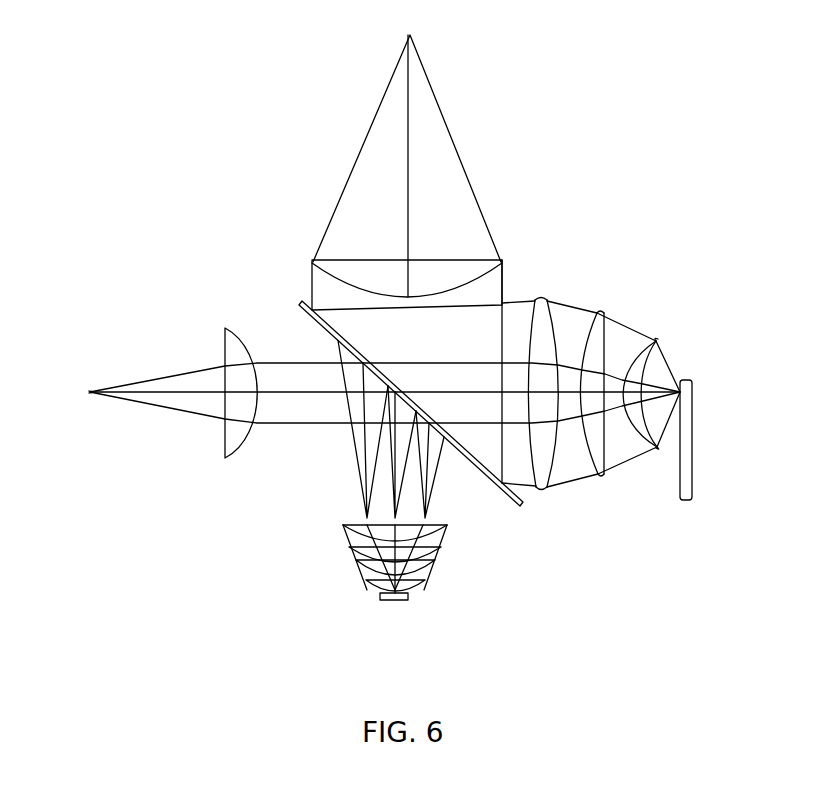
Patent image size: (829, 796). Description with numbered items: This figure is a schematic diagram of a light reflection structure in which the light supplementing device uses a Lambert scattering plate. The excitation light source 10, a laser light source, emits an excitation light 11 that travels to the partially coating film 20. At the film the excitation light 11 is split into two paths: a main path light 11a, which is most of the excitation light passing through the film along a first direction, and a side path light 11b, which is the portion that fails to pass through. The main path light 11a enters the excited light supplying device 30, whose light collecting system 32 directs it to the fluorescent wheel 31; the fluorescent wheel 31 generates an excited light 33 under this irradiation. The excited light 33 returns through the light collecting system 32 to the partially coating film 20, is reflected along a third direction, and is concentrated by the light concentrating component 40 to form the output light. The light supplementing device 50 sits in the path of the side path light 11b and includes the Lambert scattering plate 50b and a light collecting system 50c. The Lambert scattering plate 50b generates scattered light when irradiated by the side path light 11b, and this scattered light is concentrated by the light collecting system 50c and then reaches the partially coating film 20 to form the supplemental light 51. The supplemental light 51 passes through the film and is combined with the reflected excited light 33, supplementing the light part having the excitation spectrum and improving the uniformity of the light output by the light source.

The excitation light source 10 is at (90, 385).
The excitation light 11 is at (164, 379).
The main path light 11a is at (402, 362).
The side path light 11b is at (427, 467).
The partially coating film 20 is at (316, 323).
The excited light supplying device 30 is at (625, 411).
The fluorescent wheel 31 is at (693, 416).
The light collecting system 32 is at (625, 318).
The excited light 33 is at (512, 302).
The light concentrating component 40 is at (458, 258).
The light supplementing device 50 is at (363, 595).
The Lambert scattering plate 50b is at (400, 600).
The light collecting system 50c is at (350, 547).
The supplemental light 51 is at (373, 460).